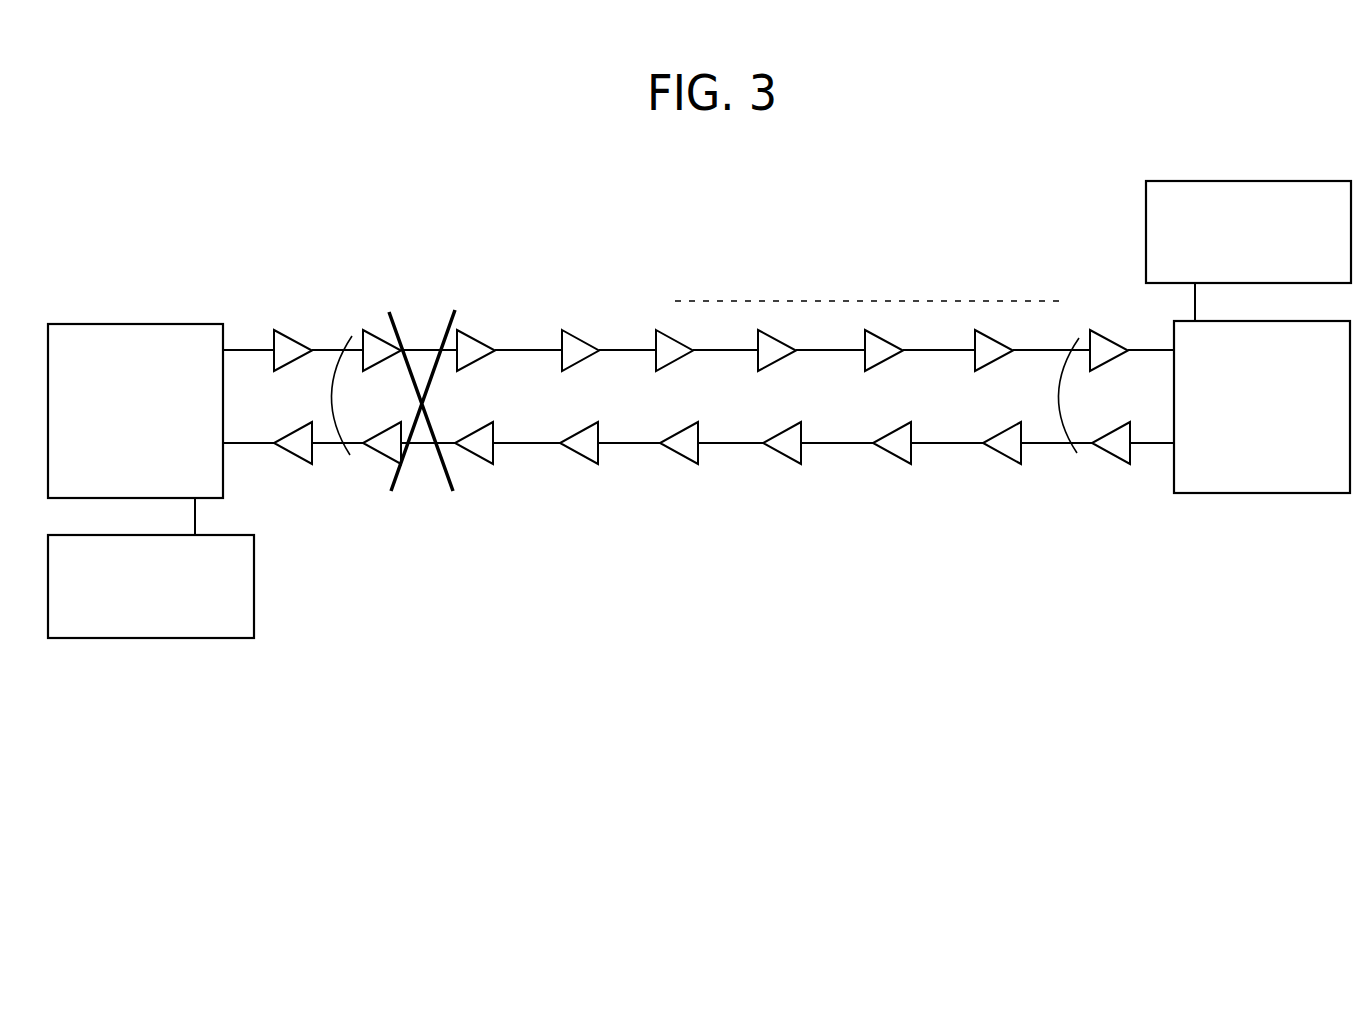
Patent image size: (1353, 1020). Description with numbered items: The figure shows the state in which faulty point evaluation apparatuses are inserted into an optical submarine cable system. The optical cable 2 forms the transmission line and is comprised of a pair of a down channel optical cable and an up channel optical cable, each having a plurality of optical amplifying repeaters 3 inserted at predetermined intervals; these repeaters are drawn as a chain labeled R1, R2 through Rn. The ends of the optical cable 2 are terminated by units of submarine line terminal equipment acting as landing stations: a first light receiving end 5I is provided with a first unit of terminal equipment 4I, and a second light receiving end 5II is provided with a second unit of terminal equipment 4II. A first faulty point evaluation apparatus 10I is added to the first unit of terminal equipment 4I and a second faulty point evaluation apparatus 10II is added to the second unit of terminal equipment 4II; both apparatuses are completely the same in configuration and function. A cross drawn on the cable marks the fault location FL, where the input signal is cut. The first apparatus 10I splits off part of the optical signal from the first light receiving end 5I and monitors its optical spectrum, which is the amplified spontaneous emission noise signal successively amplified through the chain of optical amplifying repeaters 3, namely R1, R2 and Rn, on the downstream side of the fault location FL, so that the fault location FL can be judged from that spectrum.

The optical cable 2 is at (322, 392).
The optical amplifying repeater 3 is at (709, 384).
The first optical amplifying repeater R1 is at (482, 338).
The second optical amplifying repeater R2 is at (584, 338).
The n-th optical amplifying repeater Rn is at (1107, 333).
The fault location FL is at (422, 460).
The first unit of terminal equipment 4I is at (1253, 495).
The second unit of terminal equipment 4II is at (153, 322).
The first light receiving end 5I is at (1174, 347).
The second light receiving end 5II is at (223, 445).
The first faulty point evaluation apparatus 10I is at (1233, 180).
The second faulty point evaluation apparatus 10II is at (145, 640).